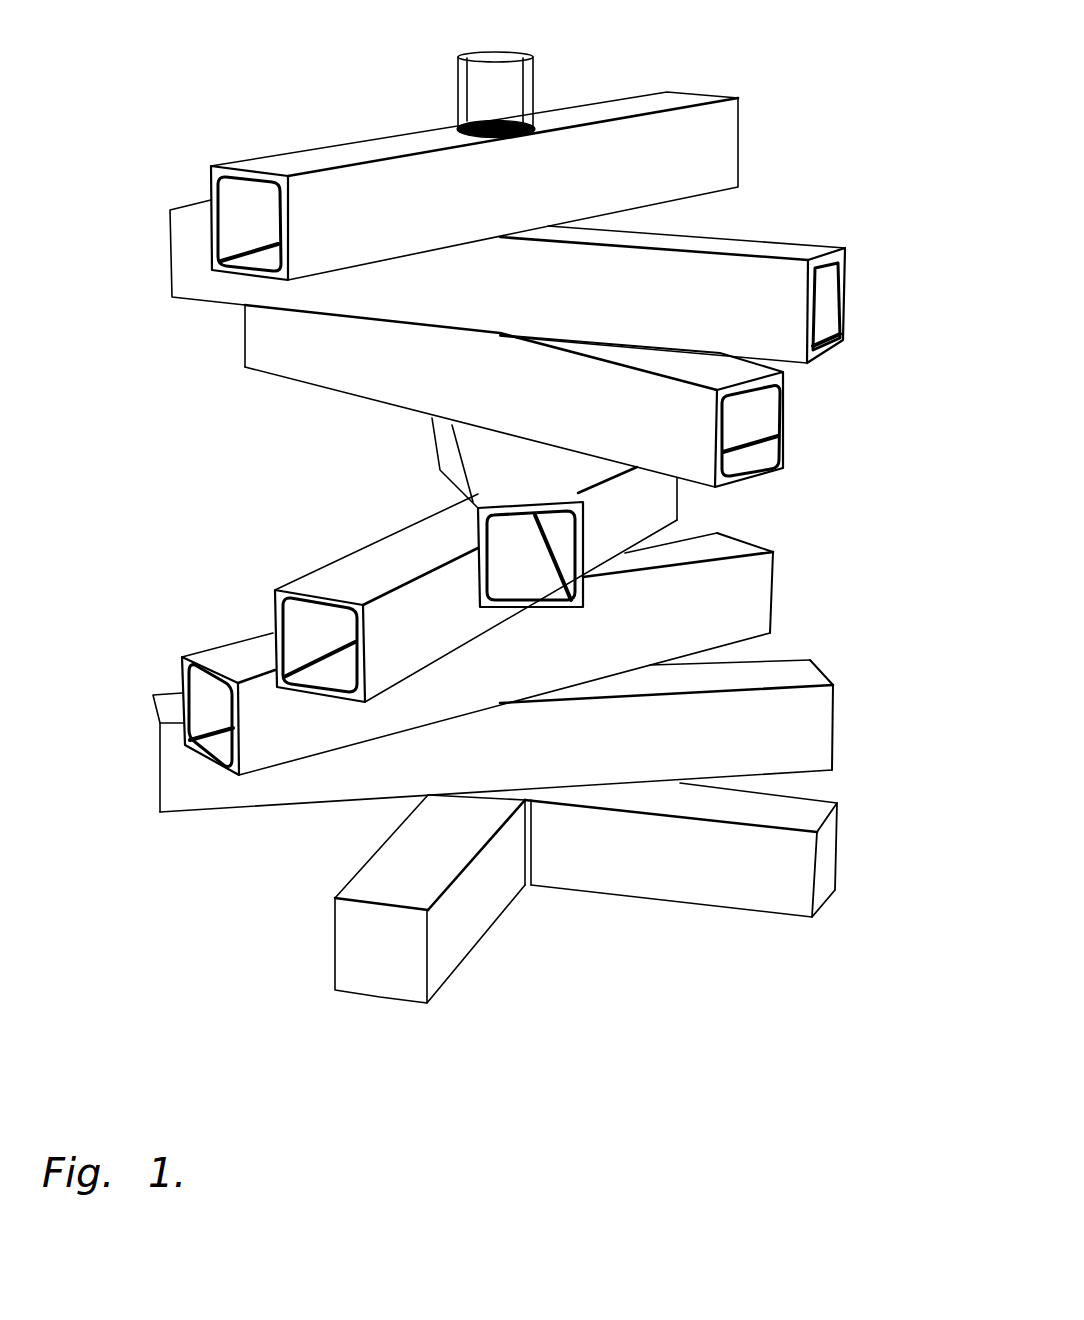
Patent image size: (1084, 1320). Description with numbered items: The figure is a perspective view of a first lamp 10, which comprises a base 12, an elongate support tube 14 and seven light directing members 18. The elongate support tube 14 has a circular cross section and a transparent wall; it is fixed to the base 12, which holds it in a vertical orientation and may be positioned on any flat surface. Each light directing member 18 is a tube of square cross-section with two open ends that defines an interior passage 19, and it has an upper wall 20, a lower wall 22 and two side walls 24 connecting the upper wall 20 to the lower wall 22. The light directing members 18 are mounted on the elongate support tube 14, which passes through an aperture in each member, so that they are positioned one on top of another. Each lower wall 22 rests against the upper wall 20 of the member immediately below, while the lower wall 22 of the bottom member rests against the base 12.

The first lamp 10 is at (870, 182).
The base 12 is at (717, 880).
The elongate support tube 14 is at (533, 92).
The light directing member 18 is at (342, 155).
The interior passage 19 is at (250, 208).
The upper wall 20 is at (775, 252).
The lower wall 22 is at (812, 360).
The side wall 24 is at (746, 327).